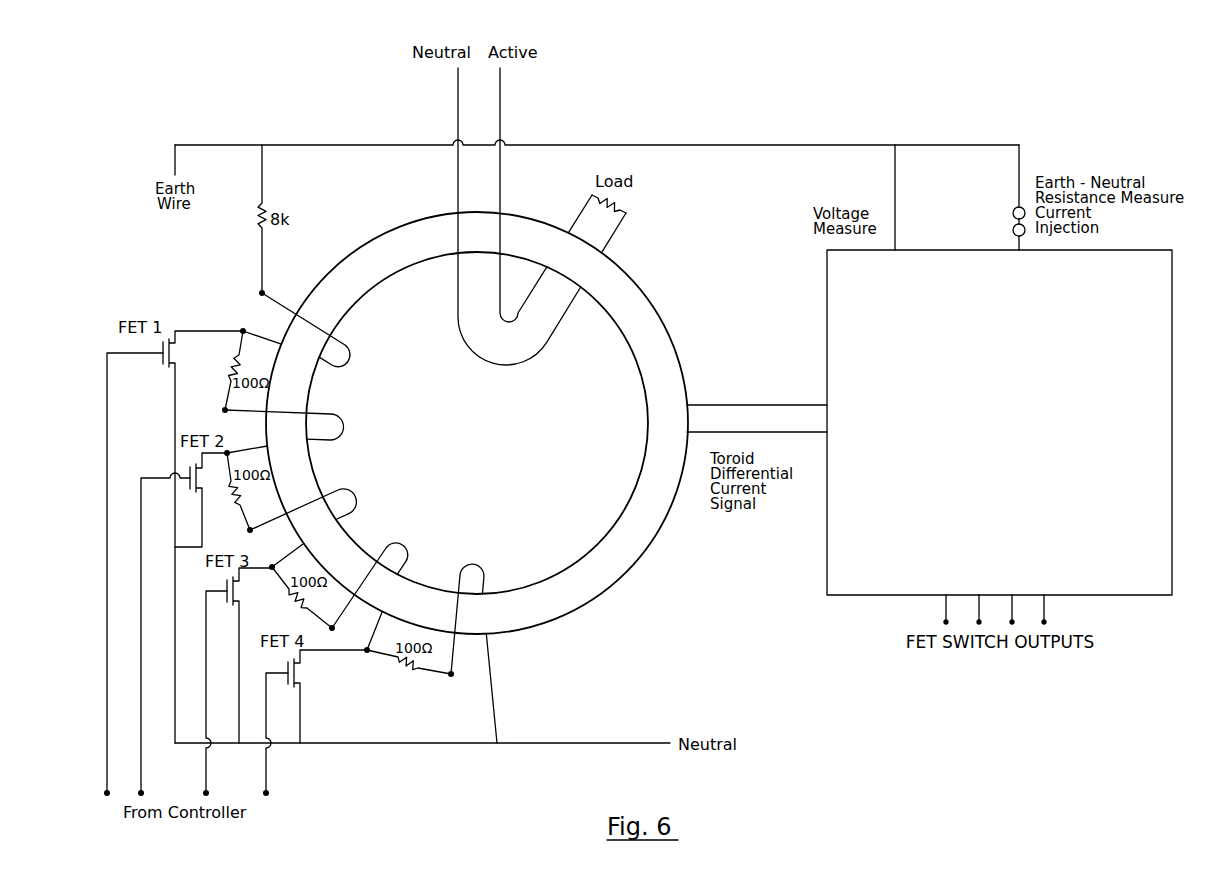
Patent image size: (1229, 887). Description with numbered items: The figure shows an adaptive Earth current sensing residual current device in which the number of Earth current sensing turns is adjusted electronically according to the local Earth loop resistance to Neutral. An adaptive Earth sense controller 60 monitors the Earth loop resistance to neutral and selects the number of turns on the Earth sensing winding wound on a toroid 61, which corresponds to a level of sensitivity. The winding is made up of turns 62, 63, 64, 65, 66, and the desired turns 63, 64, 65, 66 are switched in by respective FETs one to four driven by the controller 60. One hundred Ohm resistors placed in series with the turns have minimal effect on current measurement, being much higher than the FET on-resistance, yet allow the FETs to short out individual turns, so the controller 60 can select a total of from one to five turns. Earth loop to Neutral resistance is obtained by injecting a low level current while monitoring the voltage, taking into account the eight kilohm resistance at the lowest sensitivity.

The adaptive Earth sense controller 60 is at (1158, 520).
The toroid 61 is at (647, 323).
The turn 62 is at (355, 368).
The turn 63 is at (350, 430).
The turn 64 is at (365, 492).
The turn 65 is at (405, 542).
The turn 66 is at (473, 558).